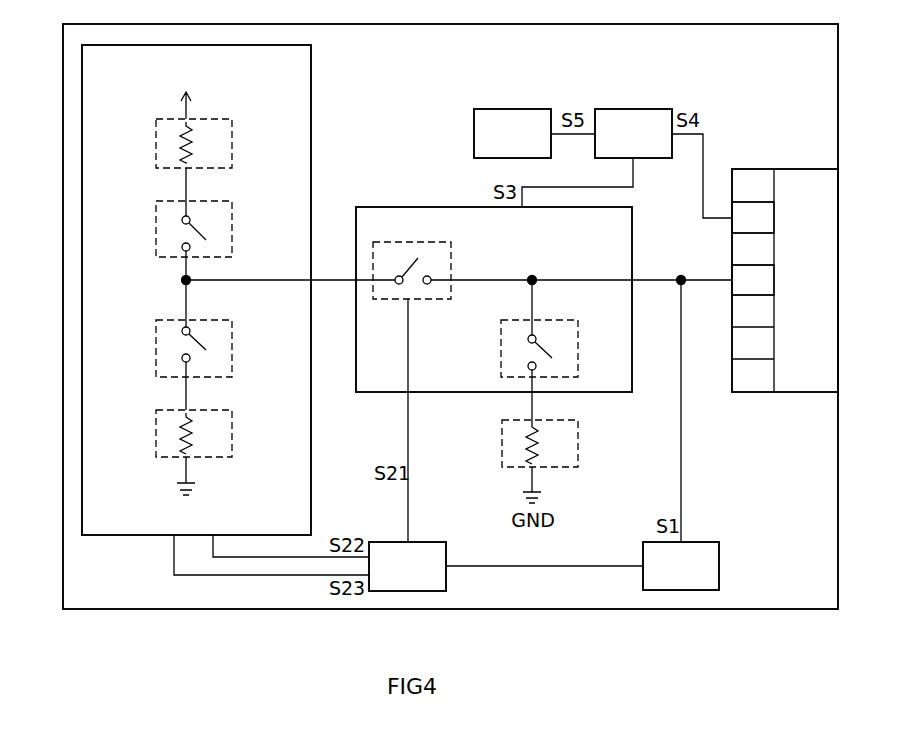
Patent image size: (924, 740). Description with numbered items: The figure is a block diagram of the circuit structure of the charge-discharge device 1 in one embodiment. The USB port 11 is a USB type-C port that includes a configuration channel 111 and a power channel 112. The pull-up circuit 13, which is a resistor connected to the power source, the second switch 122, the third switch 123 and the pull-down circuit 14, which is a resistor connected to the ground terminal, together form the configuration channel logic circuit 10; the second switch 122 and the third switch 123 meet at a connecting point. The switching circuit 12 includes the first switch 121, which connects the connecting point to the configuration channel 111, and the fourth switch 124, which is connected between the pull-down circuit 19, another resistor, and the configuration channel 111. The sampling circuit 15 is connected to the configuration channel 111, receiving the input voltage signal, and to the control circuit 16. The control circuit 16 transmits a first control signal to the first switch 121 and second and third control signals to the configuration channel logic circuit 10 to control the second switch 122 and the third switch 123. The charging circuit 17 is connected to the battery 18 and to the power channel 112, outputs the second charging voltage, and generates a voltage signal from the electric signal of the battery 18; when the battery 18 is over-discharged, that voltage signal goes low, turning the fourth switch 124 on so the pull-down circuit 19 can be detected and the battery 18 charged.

The charge-discharge device 1 is at (838, 100).
The configuration channel logic circuit 10 is at (312, 94).
The USB port 11 is at (785, 280).
The configuration channel 111 is at (753, 280).
The power channel 112 is at (753, 217).
The switching circuit 12 is at (447, 207).
The first switch 121 is at (451, 256).
The second switch 122 is at (156, 228).
The third switch 123 is at (156, 348).
The fourth switch 124 is at (501, 348).
The pull-up circuit 13 is at (232, 135).
The pull-down circuit 14 is at (232, 441).
The sampling circuit 15 is at (681, 566).
The control circuit 16 is at (407, 566).
The charging circuit 17 is at (633, 133).
The battery 18 is at (512, 133).
The pull-down circuit 19 is at (578, 452).